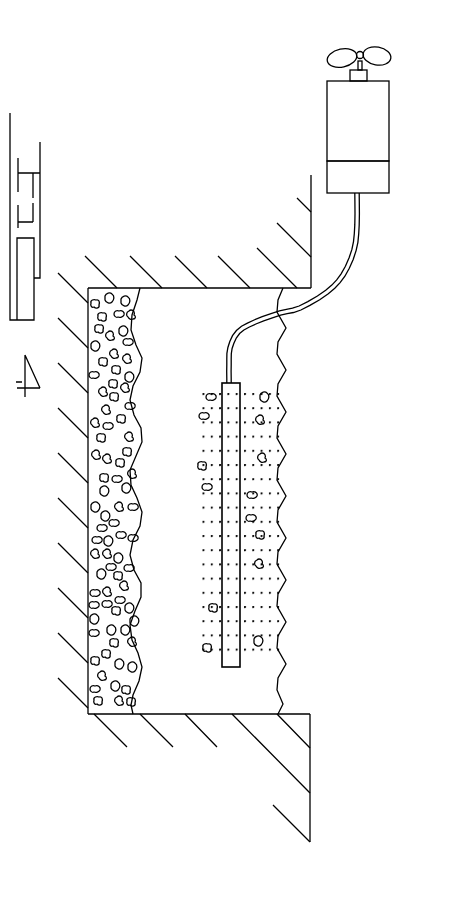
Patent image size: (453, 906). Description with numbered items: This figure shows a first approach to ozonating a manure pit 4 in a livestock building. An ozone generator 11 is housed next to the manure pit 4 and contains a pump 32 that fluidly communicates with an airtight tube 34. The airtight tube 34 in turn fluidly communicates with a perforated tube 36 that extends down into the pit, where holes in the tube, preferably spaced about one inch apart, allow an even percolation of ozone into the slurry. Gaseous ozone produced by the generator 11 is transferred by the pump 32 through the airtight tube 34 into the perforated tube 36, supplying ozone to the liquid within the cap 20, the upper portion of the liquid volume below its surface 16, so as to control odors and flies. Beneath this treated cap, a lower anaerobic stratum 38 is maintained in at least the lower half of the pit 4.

The manure pit 4 is at (174, 288).
The ozone generator 11 is at (378, 191).
The surface of the liquid volume 16 is at (275, 455).
The cap of the liquid volume 20 is at (243, 543).
The pump 32 is at (338, 118).
The airtight tube 34 is at (302, 312).
The perforated tube 36 is at (237, 640).
The lower anaerobic stratum 38 is at (110, 708).